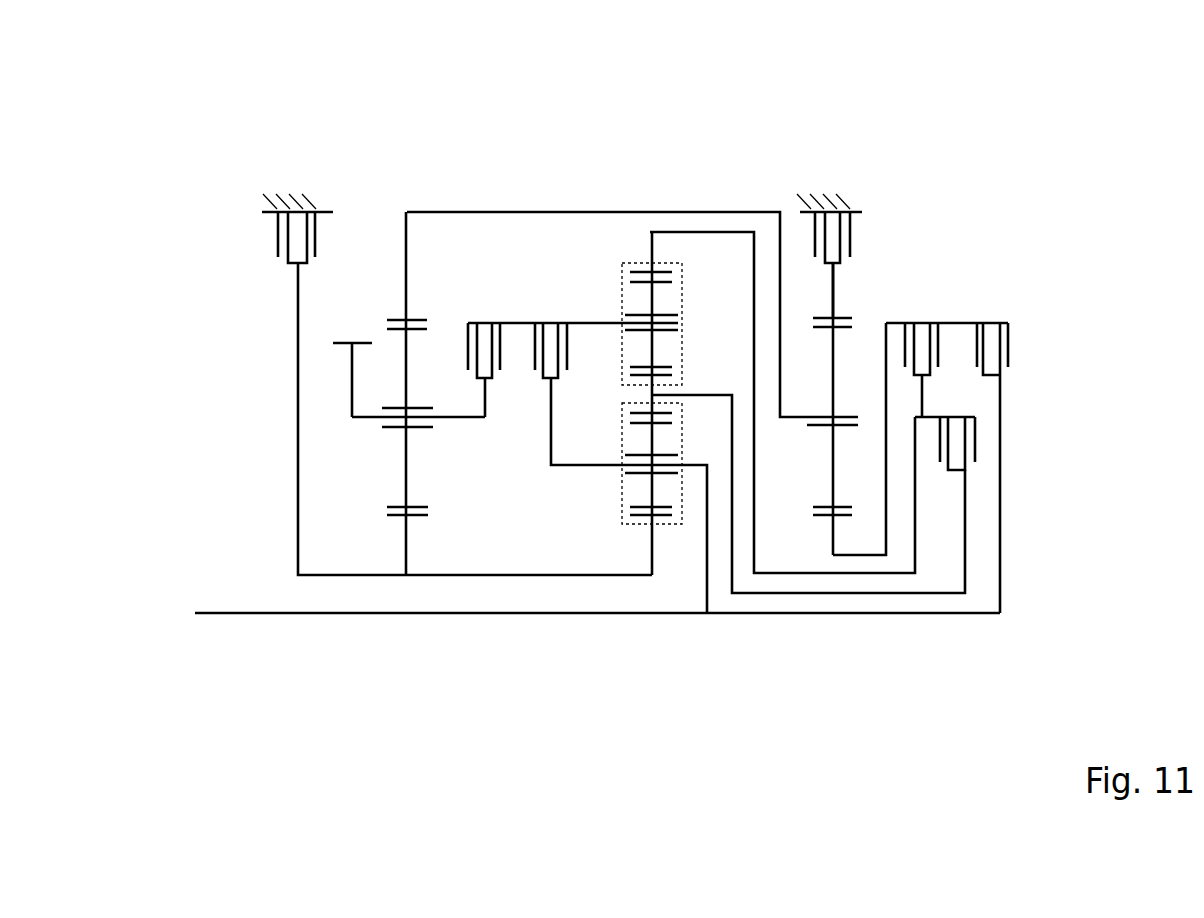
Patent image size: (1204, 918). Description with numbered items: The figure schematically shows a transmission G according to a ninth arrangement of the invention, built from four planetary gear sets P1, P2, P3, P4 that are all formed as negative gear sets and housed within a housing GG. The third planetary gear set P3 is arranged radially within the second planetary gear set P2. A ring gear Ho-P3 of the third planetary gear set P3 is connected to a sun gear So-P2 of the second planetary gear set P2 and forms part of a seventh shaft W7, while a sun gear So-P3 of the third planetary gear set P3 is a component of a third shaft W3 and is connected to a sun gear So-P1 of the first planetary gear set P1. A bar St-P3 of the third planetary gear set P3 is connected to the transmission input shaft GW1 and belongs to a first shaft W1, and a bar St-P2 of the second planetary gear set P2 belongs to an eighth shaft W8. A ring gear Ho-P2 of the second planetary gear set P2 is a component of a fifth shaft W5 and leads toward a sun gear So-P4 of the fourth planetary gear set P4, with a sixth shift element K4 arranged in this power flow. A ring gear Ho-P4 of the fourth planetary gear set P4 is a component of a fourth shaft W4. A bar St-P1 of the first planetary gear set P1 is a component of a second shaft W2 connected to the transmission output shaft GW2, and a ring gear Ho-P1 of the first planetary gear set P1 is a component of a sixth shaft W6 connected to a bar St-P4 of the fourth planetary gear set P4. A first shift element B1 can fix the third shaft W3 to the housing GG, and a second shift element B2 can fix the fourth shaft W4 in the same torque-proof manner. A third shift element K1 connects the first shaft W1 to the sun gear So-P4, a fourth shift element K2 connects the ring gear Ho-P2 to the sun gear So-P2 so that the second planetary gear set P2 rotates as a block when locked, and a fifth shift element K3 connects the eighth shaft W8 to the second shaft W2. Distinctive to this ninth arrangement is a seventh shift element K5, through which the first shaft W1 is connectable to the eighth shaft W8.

The transmission G is at (250, 155).
The housing GG is at (262, 207).
The first shift element B1 is at (266, 256).
The second shift element B2 is at (868, 218).
The transmission input shaft GW1 is at (315, 615).
The transmission output shaft GW2 is at (352, 343).
The first shaft W1 is at (483, 615).
The second shaft W2 is at (350, 395).
The third shaft W3 is at (298, 538).
The fourth shaft W4 is at (832, 300).
The fifth shaft W5 is at (917, 507).
The sixth shaft W6 is at (757, 214).
The seventh shaft W7 is at (965, 556).
The eighth shaft W8 is at (507, 320).
The third shift element K1 is at (1014, 347).
The fourth shift element K2 is at (984, 435).
The fifth shift element K3 is at (456, 316).
The sixth shift element K4 is at (940, 312).
The seventh shift element K5 is at (546, 315).
The first planetary gear set P1 is at (406, 203).
The second planetary gear set P2 is at (628, 258).
The third planetary gear set P3 is at (628, 530).
The fourth planetary gear set P4 is at (832, 617).
The ring gear of the first planetary gear set Ho-P1 is at (395, 318).
The ring gear of the second planetary gear set Ho-P2 is at (659, 262).
The ring gear of the third planetary gear set Ho-P3 is at (668, 403).
The ring gear of the fourth planetary gear set Ho-P4 is at (840, 316).
The sun gear of the first planetary gear set So-P1 is at (398, 518).
The sun gear of the second planetary gear set So-P2 is at (640, 380).
The sun gear of the third planetary gear set So-P3 is at (662, 524).
The sun gear of the fourth planetary gear set So-P4 is at (842, 517).
The bar of the first planetary gear set St-P1 is at (370, 420).
The bar of the second planetary gear set St-P2 is at (598, 320).
The bar of the third planetary gear set St-P3 is at (695, 470).
The bar of the fourth planetary gear set St-P4 is at (780, 417).